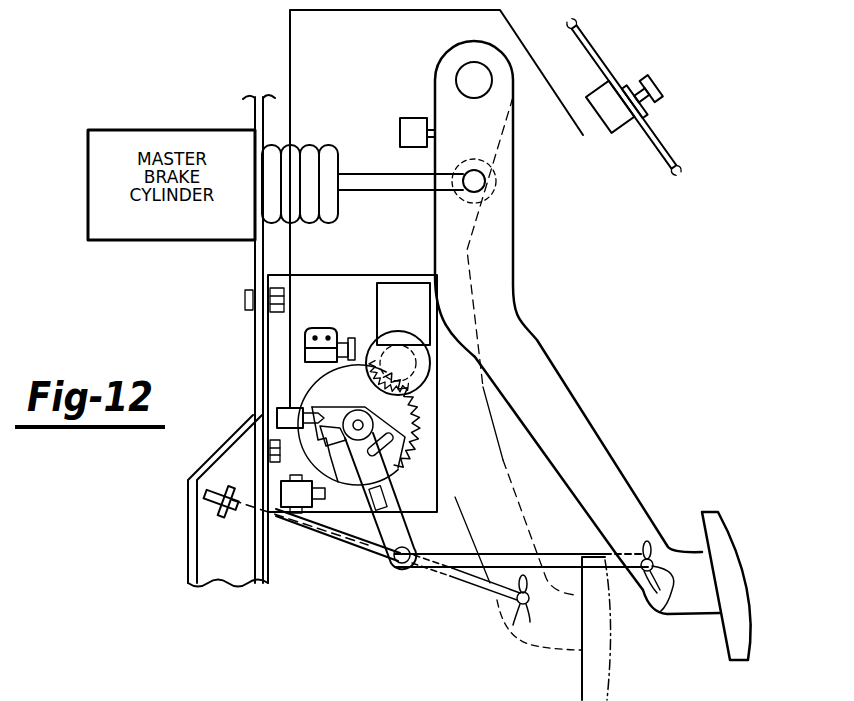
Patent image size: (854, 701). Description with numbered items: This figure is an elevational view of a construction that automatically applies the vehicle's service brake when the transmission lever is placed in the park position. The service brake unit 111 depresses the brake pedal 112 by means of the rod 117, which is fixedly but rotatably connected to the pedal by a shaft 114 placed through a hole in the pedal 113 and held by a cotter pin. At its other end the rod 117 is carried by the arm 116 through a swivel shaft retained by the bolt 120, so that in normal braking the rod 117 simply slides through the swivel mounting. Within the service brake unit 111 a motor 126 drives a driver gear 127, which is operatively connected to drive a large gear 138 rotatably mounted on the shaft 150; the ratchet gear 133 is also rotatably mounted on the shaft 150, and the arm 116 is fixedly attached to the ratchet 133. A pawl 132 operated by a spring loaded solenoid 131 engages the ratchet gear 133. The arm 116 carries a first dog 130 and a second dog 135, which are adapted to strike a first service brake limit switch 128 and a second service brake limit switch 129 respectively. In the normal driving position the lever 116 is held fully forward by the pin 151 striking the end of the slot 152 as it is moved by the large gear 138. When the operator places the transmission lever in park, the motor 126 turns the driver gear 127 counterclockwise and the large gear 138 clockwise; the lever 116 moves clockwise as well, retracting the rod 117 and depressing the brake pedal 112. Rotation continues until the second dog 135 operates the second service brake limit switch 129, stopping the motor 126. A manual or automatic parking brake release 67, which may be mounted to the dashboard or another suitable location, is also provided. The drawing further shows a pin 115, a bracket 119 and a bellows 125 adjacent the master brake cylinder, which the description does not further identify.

The parking brake release 67 is at (646, 146).
The service brake unit 111 is at (394, 273).
The brake pedal 112 is at (587, 453).
The pedal 113 is at (650, 550).
The shaft 114 is at (655, 615).
The pin 115 is at (643, 562).
The arm 116 is at (378, 542).
The rod 117 is at (550, 555).
The bracket 119 is at (560, 665).
The bolt 120 is at (397, 566).
The bellows 125 is at (340, 274).
The motor 126 is at (425, 295).
The driver gear 127 is at (432, 350).
The first service brake limit switch 128 is at (305, 357).
The second service brake limit switch 129 is at (280, 500).
The first dog 130 is at (355, 337).
The spring loaded solenoid 131 is at (275, 420).
The pawl 132 is at (372, 360).
The ratchet gear 133 is at (292, 500).
The second dog 135 is at (358, 519).
The large gear 138 is at (427, 420).
The shaft 150 is at (322, 440).
The pin 151 is at (437, 490).
The slot 152 is at (410, 450).